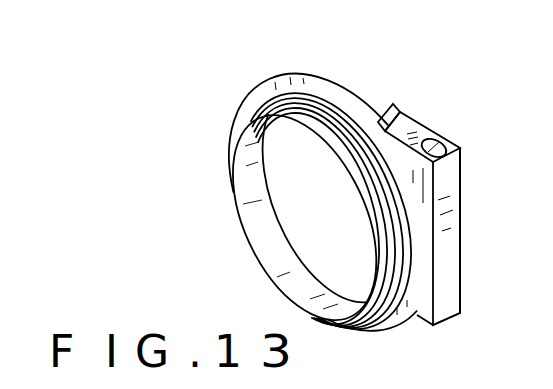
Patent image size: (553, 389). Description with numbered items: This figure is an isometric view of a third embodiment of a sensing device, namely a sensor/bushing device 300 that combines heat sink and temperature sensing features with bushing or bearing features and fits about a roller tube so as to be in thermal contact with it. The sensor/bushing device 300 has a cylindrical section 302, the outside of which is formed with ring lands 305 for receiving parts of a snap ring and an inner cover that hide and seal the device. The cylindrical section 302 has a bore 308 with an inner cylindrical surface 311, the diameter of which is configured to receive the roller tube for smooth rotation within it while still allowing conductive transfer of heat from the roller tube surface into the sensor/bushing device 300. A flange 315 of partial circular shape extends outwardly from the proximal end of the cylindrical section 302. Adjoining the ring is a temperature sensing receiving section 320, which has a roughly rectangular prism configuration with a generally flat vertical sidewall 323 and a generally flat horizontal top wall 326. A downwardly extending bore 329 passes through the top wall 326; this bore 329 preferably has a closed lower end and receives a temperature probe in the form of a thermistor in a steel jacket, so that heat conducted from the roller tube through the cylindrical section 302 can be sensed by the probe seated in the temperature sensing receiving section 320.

The sensor/bushing device 300 is at (199, 103).
The cylindrical section 302 is at (221, 213).
The ring lands 305 is at (245, 116).
The bore 308 is at (267, 247).
The inner cylindrical surface 311 is at (255, 167).
The flange 315 is at (268, 92).
The temperature sensing receiving section 320 is at (420, 122).
The vertical sidewall 323 is at (448, 236).
The top wall 326 is at (397, 123).
The bore 329 is at (436, 150).